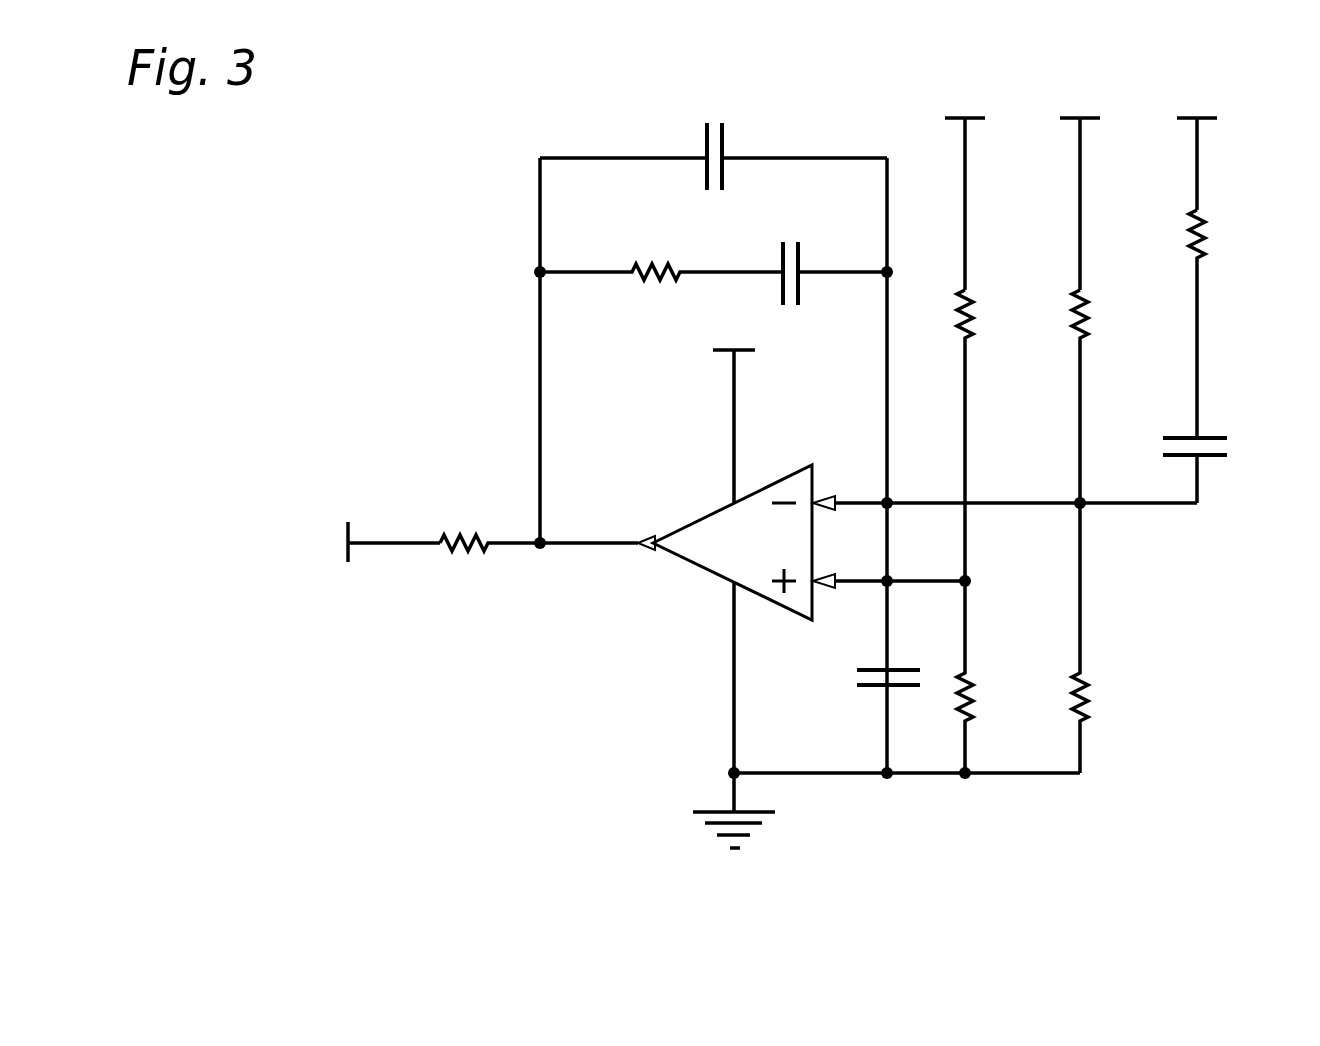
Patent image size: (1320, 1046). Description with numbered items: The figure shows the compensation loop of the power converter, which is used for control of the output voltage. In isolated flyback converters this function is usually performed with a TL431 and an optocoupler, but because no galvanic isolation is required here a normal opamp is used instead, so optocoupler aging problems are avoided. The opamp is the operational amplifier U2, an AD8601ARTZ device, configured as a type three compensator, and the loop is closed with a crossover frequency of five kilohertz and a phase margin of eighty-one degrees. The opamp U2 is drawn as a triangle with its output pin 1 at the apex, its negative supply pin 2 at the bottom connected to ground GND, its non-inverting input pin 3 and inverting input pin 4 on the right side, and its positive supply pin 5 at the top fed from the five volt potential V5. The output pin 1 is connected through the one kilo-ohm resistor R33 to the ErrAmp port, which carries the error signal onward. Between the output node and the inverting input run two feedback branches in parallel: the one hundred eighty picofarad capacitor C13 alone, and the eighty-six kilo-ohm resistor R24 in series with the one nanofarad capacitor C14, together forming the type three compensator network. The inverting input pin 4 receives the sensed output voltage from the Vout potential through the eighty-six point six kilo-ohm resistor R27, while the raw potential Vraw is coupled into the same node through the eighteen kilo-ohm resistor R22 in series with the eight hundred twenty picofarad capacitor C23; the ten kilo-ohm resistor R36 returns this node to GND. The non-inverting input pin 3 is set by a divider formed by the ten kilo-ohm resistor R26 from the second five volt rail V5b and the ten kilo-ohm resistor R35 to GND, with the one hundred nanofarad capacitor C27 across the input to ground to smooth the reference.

The capacitor C13 is at (713, 142).
The capacitor C14 is at (829, 259).
The resistor R24 is at (661, 255).
The resistor R33 is at (539, 526).
The operational amplifier U2 is at (716, 522).
The opamp output pin 1 is at (660, 534).
The opamp ground pin 2 is at (732, 582).
The opamp non-inverting input pin 3 is at (820, 581).
The opamp inverting input pin 4 is at (816, 502).
The opamp supply pin 5 is at (734, 500).
The electric potential of 5 volts V5 is at (734, 337).
The electric potential of 5 volts V5b is at (965, 189).
The output voltage potential Vout is at (1080, 189).
The raw voltage potential Vraw is at (1196, 149).
The resistor R22 is at (1219, 324).
The resistor R26 is at (990, 436).
The resistor R27 is at (1106, 396).
The resistor R35 is at (990, 677).
The resistor R36 is at (1105, 638).
The capacitor C23 is at (1221, 469).
The capacitor C27 is at (866, 682).
The ground GND is at (734, 826).
The error amplifier signal ErrAmp is at (351, 542).